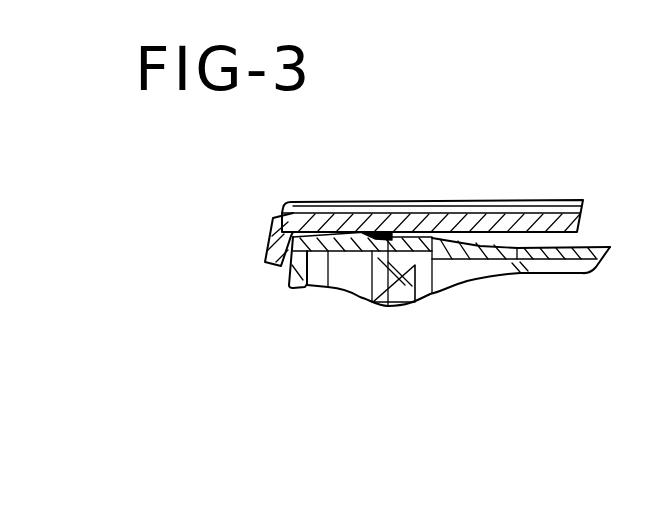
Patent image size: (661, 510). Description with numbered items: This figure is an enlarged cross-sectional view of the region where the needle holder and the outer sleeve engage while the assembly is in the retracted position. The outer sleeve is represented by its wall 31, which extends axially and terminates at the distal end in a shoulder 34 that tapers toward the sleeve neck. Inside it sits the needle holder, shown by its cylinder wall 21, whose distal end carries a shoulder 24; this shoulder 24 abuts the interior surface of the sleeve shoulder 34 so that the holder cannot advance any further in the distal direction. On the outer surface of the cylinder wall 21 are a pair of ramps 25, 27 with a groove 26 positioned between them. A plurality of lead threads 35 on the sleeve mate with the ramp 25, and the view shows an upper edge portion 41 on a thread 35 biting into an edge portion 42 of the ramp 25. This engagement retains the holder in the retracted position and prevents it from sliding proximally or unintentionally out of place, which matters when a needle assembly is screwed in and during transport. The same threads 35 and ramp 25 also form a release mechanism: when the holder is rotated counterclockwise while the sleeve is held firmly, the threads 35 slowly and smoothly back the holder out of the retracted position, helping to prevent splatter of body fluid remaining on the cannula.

The cylinder wall 21 is at (563, 260).
The shoulder 24 is at (293, 283).
The ramp 25 is at (365, 292).
The groove 26 is at (420, 238).
The ramp 27 is at (467, 273).
The wall 31 is at (557, 217).
The shoulder 34 is at (272, 232).
The lead threads 35 is at (417, 293).
The upper edge portion 41 is at (362, 230).
The edge portion 42 is at (388, 235).